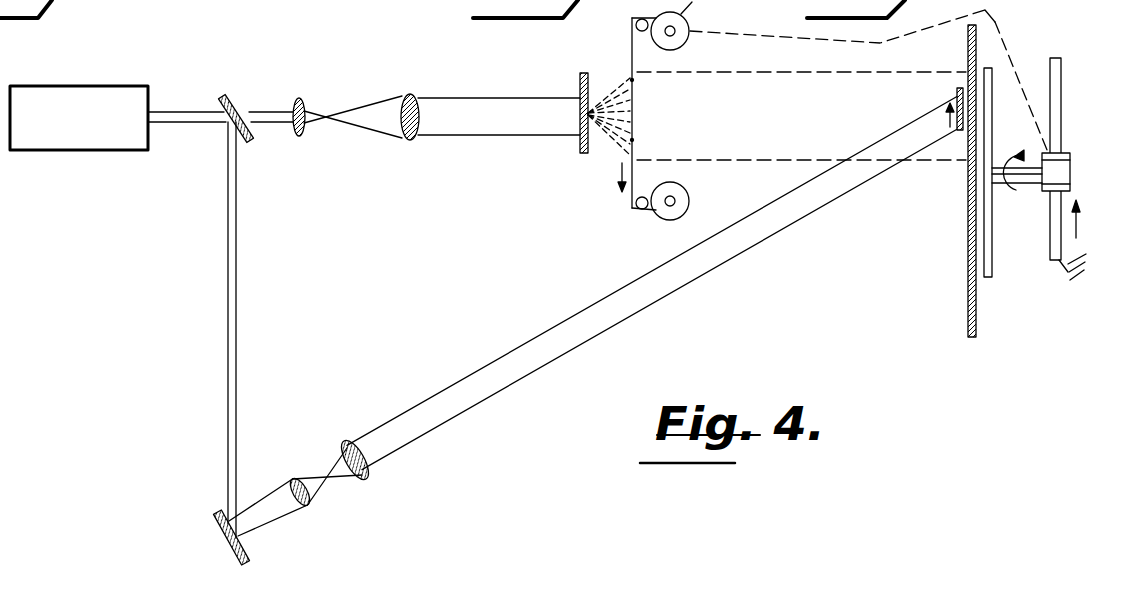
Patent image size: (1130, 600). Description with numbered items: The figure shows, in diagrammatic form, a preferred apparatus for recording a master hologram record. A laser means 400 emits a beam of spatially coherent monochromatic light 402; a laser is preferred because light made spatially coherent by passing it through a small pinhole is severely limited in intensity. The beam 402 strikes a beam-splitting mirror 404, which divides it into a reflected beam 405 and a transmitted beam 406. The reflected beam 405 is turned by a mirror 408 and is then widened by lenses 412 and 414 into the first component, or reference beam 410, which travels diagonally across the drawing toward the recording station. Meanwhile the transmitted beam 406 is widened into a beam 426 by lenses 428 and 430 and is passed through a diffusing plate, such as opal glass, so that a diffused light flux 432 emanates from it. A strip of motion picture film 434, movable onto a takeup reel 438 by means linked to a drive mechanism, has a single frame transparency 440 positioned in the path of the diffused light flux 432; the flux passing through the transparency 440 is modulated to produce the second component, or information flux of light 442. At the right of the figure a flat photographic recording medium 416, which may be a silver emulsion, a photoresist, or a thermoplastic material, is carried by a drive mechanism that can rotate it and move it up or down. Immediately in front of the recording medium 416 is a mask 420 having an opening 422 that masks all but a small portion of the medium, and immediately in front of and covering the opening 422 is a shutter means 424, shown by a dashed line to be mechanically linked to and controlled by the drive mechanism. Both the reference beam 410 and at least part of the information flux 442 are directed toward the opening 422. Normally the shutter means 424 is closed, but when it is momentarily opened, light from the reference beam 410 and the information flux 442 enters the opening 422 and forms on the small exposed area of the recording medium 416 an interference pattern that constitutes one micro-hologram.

The laser means 400 is at (70, 150).
The beam of spatially coherent monochromatic light 402 is at (178, 125).
The beam-splitting mirror 404 is at (234, 95).
The reflected beam 405 is at (228, 231).
The transmitted beam 406 is at (266, 112).
The mirror 408 is at (225, 545).
The reference beam 410 is at (418, 405).
The lens 412 is at (298, 512).
The lens 414 is at (360, 482).
The photographic recording medium 416 is at (993, 268).
The mask 420 is at (995, 22).
The opening 422 is at (976, 95).
The shutter means 424 is at (959, 131).
The widened beam 426 is at (447, 95).
The lens 428 is at (291, 135).
The lens 430 is at (405, 139).
The diffused light flux 432 is at (599, 88).
The strip of motion picture film 434 is at (633, 51).
The takeup reel 438 is at (690, 201).
The single frame transparency 440 is at (632, 108).
The information flux of light 442 is at (806, 73).